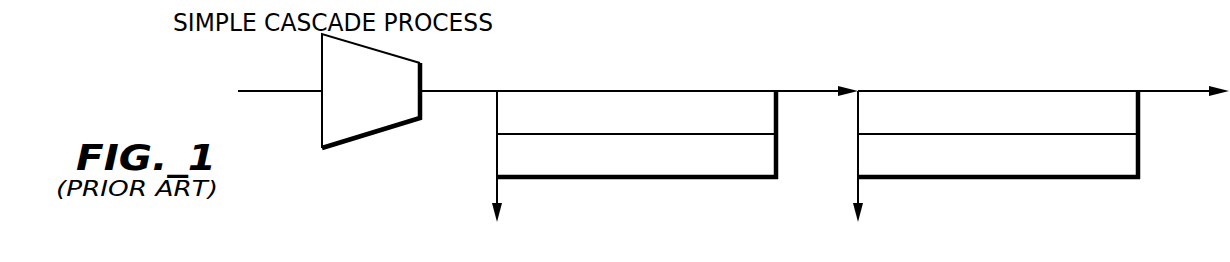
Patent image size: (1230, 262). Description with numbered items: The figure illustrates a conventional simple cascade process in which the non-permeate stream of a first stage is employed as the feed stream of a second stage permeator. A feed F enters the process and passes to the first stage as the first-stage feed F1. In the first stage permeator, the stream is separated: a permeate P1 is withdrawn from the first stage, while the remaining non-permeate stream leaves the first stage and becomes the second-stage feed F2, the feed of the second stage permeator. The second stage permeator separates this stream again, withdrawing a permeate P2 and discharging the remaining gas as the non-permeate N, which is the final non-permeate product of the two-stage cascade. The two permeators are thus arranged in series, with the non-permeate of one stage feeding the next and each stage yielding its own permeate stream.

The feed F is at (280, 78).
The feed 1 F1 is at (458, 78).
The feed 2 F2 is at (818, 81).
The non-permeate N is at (1184, 82).
The permeate P1 is at (635, 158).
The permeate P2 is at (996, 158).